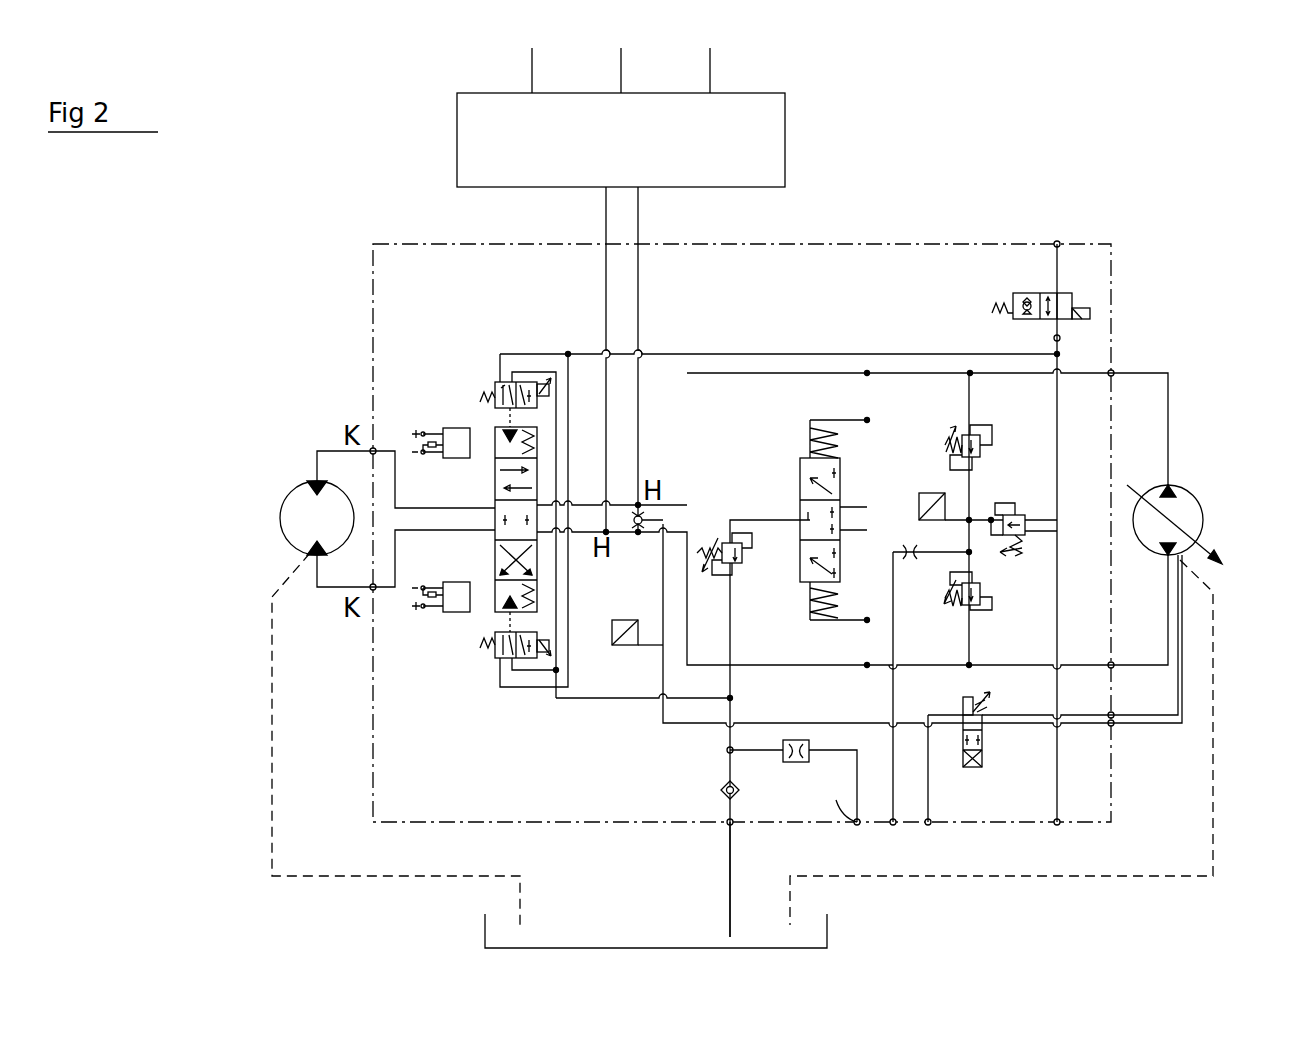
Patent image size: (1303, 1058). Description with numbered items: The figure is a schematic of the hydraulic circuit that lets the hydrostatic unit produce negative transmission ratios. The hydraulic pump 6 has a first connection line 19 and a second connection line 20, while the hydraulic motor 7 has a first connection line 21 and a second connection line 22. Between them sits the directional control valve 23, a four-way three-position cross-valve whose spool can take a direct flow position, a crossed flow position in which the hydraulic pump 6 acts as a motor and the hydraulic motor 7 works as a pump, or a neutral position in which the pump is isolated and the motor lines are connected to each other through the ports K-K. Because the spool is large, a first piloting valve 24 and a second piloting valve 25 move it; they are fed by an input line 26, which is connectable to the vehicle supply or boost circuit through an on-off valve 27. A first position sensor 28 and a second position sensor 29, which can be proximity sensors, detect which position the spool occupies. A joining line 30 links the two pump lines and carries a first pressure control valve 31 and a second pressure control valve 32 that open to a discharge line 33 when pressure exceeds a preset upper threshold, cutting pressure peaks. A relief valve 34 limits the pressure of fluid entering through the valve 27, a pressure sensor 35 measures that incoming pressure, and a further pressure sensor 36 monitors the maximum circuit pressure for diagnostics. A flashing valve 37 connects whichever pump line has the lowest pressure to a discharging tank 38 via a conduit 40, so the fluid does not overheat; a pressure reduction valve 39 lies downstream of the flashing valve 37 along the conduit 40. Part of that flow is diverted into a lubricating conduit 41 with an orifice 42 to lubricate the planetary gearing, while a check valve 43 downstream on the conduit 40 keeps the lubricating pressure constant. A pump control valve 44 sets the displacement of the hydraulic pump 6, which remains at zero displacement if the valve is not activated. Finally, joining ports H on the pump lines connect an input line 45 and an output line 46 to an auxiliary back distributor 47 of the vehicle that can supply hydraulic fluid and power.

The hydraulic pump 6 is at (1204, 505).
The hydraulic motor 7 is at (280, 498).
The first connection line 19 is at (1170, 400).
The second connection line 20 is at (1130, 668).
The first connection line 21 is at (325, 451).
The second connection line 22 is at (325, 590).
The directional control valve 23 is at (495, 481).
The first piloting valve 24 is at (488, 370).
The second piloting valve 25 is at (492, 672).
The input line 26 is at (715, 352).
The valve 27 is at (1008, 288).
The first position sensor 28 is at (452, 428).
The second position sensor 29 is at (452, 612).
The joining line 30 is at (972, 400).
The first pressure control valve 31 is at (950, 420).
The second pressure control valve 32 is at (993, 604).
The discharge line 33 is at (893, 790).
The relief valve 34 is at (1022, 506).
The pressure sensor 35 is at (918, 493).
The further pressure sensor 36 is at (630, 648).
The flashing valve 37 is at (800, 462).
The discharging tank 38 is at (485, 928).
The pressure reduction valve 39 is at (752, 568).
The conduit 40 is at (732, 688).
The lubricating conduit 41 is at (836, 800).
The orifice 42 is at (797, 765).
The check valve 43 is at (722, 790).
The pump control valve 44 is at (984, 760).
The input line 45 is at (606, 213).
The output line 46 is at (638, 213).
The back distributor 47 is at (641, 160).